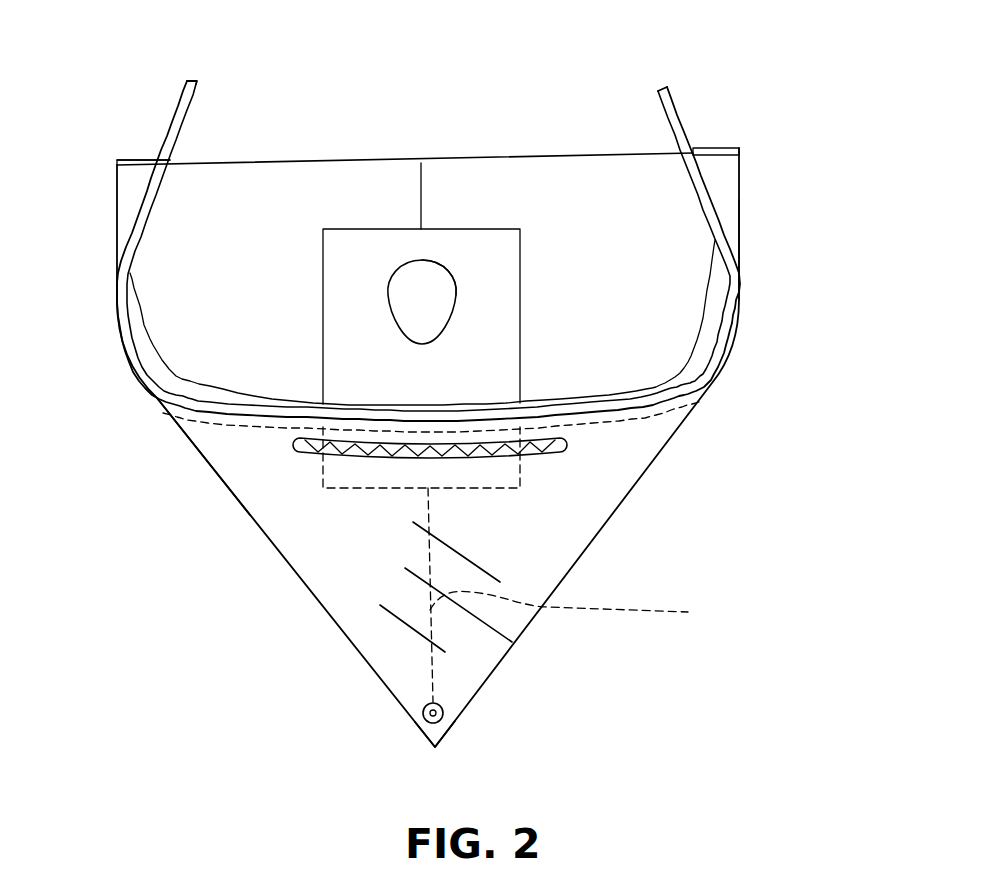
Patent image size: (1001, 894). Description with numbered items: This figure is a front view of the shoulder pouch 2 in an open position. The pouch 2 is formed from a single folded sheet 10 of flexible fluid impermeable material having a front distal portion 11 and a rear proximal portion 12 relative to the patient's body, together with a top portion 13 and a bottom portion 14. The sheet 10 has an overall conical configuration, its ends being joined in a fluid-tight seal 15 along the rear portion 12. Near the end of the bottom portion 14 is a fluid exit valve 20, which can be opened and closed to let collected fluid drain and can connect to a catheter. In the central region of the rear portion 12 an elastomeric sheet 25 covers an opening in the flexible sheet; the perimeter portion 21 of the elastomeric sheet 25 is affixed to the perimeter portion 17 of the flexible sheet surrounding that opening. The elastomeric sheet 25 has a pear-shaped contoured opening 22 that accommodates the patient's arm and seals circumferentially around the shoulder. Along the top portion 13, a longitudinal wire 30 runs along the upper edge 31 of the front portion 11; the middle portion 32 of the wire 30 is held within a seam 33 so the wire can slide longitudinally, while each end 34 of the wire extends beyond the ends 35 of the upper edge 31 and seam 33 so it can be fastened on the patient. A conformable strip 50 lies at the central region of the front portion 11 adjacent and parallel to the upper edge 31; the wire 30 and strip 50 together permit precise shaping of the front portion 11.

The shoulder pouch 2 is at (190, 482).
The folded sheet 10 is at (573, 565).
The front distal portion 11 is at (497, 625).
The rear proximal portion 12 is at (575, 303).
The top portion 13 is at (214, 175).
The bottom portion 14 is at (445, 735).
The fluid-tight seal 15 is at (571, 605).
The perimeter portion of the flexible sheet 17 is at (522, 245).
The fluid exit valve 20 is at (435, 702).
The perimeter portion of the elastomeric sheet 21 is at (443, 238).
The contoured opening 22 is at (432, 282).
The elastomeric sheet 25 is at (353, 260).
The longitudinal wire 30 is at (728, 246).
The upper edge 31 is at (707, 312).
The middle portion of the wire 32 is at (568, 418).
The seam 33 is at (640, 415).
The ends of the wire 34 is at (178, 88).
The ends of the upper edge 35 is at (707, 147).
The conformable strip 50 is at (553, 450).